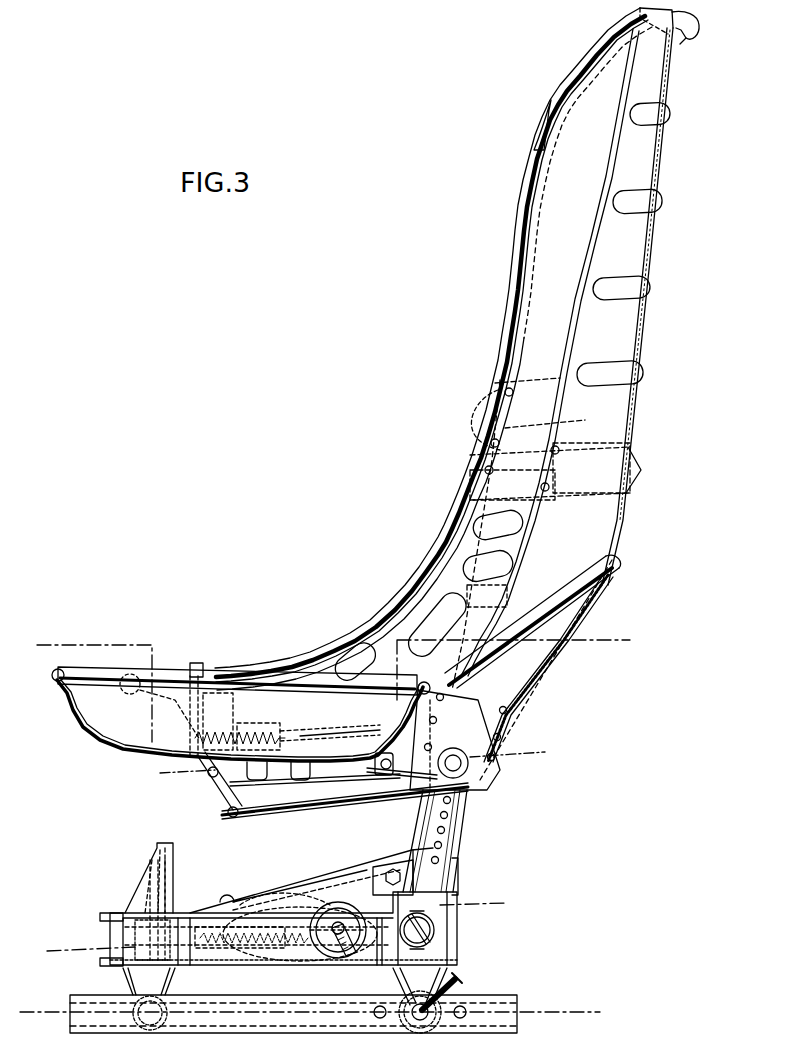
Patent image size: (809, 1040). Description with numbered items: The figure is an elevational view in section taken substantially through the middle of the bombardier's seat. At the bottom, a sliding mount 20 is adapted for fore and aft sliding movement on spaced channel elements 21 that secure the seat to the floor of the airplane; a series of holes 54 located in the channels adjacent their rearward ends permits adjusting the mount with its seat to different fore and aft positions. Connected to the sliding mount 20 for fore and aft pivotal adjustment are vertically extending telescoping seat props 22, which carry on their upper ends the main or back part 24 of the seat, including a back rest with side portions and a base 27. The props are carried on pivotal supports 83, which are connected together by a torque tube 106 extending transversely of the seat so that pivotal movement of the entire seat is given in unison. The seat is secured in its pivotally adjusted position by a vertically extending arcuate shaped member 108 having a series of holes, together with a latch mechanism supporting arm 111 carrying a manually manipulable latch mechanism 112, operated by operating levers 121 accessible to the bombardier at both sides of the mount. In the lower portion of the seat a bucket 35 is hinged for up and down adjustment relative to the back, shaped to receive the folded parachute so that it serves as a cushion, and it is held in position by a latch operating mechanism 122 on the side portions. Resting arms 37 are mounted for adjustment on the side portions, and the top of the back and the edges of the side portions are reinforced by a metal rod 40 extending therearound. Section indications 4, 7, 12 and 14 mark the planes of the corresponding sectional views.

The section line 4- 4 is at (81, 948).
The section line 7- 7 is at (37, 632).
The section line 12-12 / seat hinge bracket 12 is at (183, 760).
The section line 14- 14 is at (45, 1022).
The sliding mount 20 is at (190, 916).
The channel elements 21 is at (512, 996).
The telescoping seat props 22 is at (460, 831).
The main or back part of the seat 24 is at (664, 180).
The base 27 is at (296, 806).
The bucket 35 is at (110, 745).
The resting arms 37 is at (536, 150).
The metal rod 40 is at (202, 670).
The holes 54 is at (455, 1008).
The pivotal support 83 is at (452, 878).
The torque tube 106 is at (436, 928).
The arcuate shaped member 108 is at (157, 858).
The latch mechanism supporting arm 111 is at (366, 872).
The latch mechanism 112 is at (289, 955).
The operating levers 121 is at (278, 903).
The latch operating mechanism 122 is at (336, 726).